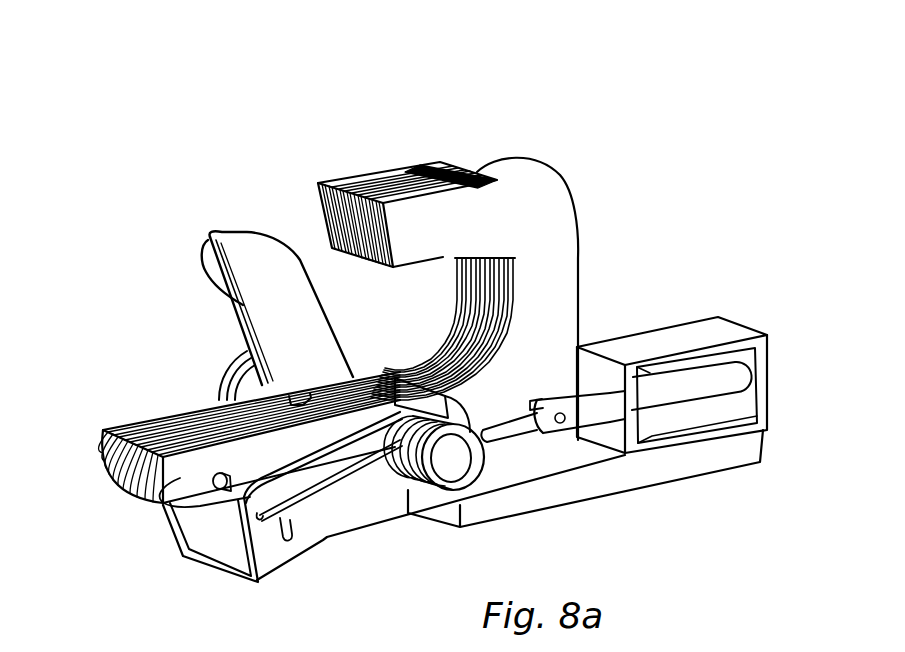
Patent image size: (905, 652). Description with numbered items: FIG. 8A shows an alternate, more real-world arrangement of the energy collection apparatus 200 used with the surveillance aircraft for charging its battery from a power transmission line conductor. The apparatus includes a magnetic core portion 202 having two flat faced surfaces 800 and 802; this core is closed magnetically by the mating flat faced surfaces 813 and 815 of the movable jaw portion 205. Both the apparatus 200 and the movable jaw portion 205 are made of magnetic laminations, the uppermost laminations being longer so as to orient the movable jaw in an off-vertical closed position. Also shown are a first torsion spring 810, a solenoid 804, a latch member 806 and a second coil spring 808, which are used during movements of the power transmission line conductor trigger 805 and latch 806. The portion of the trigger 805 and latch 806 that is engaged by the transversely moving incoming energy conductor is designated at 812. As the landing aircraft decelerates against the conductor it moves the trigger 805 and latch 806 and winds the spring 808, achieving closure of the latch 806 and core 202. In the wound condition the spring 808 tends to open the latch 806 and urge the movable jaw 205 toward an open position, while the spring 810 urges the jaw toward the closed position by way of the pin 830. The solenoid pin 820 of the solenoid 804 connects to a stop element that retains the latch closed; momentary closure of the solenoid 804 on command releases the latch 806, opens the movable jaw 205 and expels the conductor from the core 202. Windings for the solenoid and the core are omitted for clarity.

The energy collection apparatus 200 is at (425, 113).
The magnetic core portion 202 is at (437, 226).
The movable jaw portion 205 is at (115, 470).
The flat faced surface 800 is at (370, 224).
The flat faced surface 802 is at (365, 340).
The solenoid 804 is at (685, 334).
The power transmission line conductor trigger 805 is at (288, 266).
The latch member 806 is at (320, 542).
The second coil spring 808 is at (247, 367).
The first torsion spring 810 is at (363, 493).
The engaged portion of trigger and latch 812 is at (213, 277).
The flat faced surface 813 is at (191, 430).
The flat faced surface 815 is at (290, 397).
The solenoid pin 820 is at (572, 413).
The pin 830 is at (167, 513).